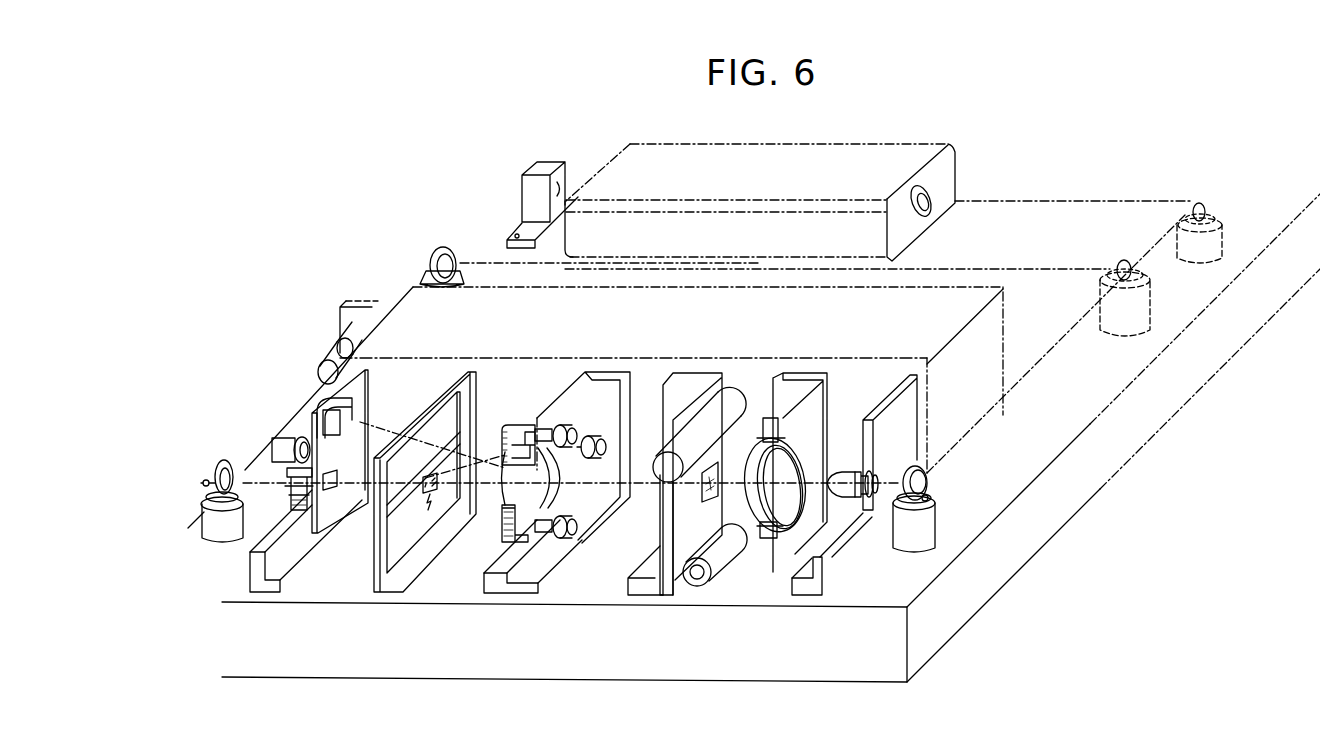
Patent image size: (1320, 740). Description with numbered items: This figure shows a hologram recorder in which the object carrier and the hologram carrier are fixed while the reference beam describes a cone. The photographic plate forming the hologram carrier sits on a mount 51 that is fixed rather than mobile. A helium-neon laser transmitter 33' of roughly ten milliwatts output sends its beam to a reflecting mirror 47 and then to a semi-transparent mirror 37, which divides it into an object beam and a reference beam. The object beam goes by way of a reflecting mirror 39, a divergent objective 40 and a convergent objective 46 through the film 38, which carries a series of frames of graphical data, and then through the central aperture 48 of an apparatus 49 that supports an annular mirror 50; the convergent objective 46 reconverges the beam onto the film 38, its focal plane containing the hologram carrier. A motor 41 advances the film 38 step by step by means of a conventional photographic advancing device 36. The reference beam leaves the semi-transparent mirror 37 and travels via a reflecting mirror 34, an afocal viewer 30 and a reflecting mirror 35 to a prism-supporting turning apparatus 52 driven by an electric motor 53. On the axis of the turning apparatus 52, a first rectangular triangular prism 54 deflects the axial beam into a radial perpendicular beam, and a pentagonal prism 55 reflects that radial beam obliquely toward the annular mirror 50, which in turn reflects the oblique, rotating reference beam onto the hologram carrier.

The afocal viewer 30 is at (357, 333).
The helium-neon laser transmitter 33' is at (877, 188).
The reflecting mirror 34 is at (449, 262).
The reflecting mirror 35 is at (227, 470).
The advancing device 36 is at (748, 385).
The semi-transparent mirror 37 is at (1125, 262).
The film 38 is at (720, 463).
The reflecting mirror 39 is at (910, 473).
The divergent objective 40 is at (842, 473).
The motor 41 is at (658, 466).
The convergent objective 46 is at (775, 494).
The reflecting mirror 47 is at (1200, 203).
The central aperture 48 is at (533, 490).
The apparatus supporting annular mirror 49 is at (502, 542).
The annular mirror 50 is at (503, 430).
The mount 51 is at (481, 394).
The prism-supporting turning apparatus 52 is at (340, 449).
The motor 53 is at (283, 442).
The first rectangular triangular prism 54 is at (330, 478).
The pentagonal prism 55 is at (352, 410).